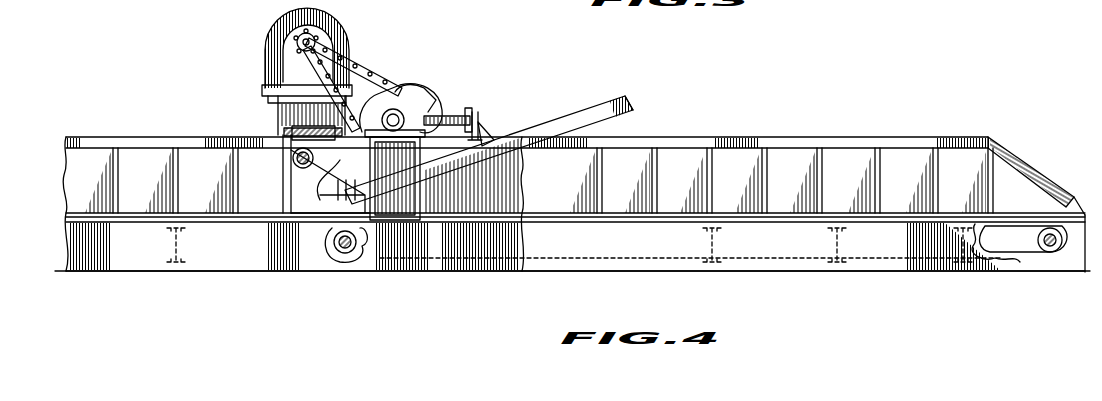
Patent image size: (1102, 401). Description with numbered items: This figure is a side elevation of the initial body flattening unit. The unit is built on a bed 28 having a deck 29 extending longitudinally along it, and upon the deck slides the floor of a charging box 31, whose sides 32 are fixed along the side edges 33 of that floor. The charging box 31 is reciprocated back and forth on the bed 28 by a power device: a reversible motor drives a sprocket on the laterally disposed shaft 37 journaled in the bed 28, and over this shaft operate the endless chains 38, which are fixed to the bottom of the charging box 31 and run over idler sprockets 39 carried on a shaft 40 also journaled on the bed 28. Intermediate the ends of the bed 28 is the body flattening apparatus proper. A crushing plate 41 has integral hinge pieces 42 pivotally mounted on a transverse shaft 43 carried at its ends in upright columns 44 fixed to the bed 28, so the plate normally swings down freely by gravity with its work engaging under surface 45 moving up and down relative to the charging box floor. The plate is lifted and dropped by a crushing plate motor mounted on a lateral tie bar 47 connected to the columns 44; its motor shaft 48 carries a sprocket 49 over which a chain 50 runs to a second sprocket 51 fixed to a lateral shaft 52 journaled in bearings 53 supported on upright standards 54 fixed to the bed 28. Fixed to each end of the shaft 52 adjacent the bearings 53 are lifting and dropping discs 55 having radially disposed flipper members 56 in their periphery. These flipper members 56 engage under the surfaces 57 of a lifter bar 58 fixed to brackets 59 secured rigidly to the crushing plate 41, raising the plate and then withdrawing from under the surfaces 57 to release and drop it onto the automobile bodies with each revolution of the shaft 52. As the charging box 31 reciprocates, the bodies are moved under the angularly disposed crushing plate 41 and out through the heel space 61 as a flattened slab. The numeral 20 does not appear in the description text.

The deck 20 is at (186, 137).
The bed 28 is at (220, 262).
The deck 29 is at (1084, 213).
The charging box 31 is at (66, 150).
The sides 32 is at (72, 178).
The side edges 33 is at (68, 221).
The laterally disposed shaft 37 is at (1050, 252).
The endless chains 38 is at (1016, 262).
The idler sprockets 39 is at (362, 258).
The shaft 40 is at (336, 250).
The crushing plate 41 is at (618, 98).
The hinge pieces 42 is at (284, 136).
The transverse shaft 43 is at (282, 124).
The upright columns 44 is at (290, 215).
The work engaging under surface 45 is at (632, 112).
The lateral tie bar 47 is at (272, 112).
The motor shaft 48 is at (290, 50).
The sprocket 49 is at (318, 44).
The chain 50 is at (360, 70).
The sprocket 51 is at (386, 92).
The lateral shaft 52 is at (405, 114).
The bearings 53 is at (412, 126).
The upright standards 54 is at (422, 220).
The lifting and dropping discs 55 is at (412, 96).
The flipper members 56 is at (455, 116).
The surfaces 57 is at (482, 132).
The lifter bar 58 is at (474, 118).
The brackets 59 is at (496, 140).
The heel space 61 is at (366, 242).